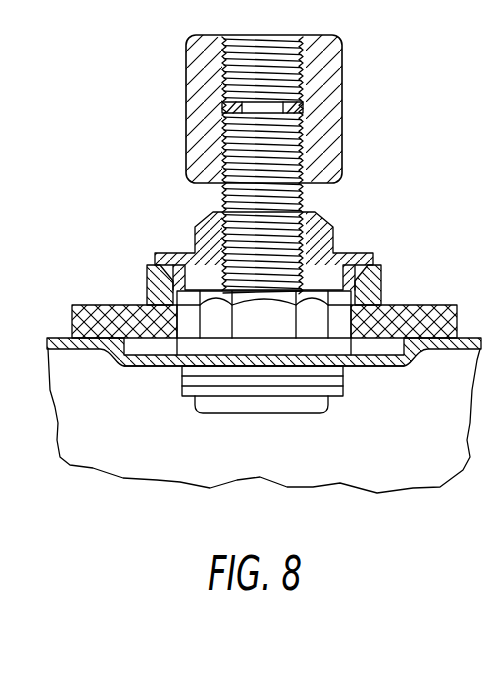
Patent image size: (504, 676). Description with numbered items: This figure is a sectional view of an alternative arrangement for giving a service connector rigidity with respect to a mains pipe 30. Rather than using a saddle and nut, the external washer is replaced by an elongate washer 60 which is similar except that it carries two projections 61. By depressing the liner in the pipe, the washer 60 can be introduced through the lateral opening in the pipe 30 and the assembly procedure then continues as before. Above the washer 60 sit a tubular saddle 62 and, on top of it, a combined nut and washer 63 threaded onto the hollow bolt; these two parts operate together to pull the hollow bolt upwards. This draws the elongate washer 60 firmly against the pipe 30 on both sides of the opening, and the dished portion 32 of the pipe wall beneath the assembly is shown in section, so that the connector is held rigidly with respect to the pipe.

The mains pipe 30 is at (436, 328).
The dished portion of plate 32 is at (442, 344).
The washer 60 is at (208, 345).
The projections 61 is at (140, 342).
The tubular saddle 62 is at (382, 282).
The combined nut and washer 63 is at (314, 243).